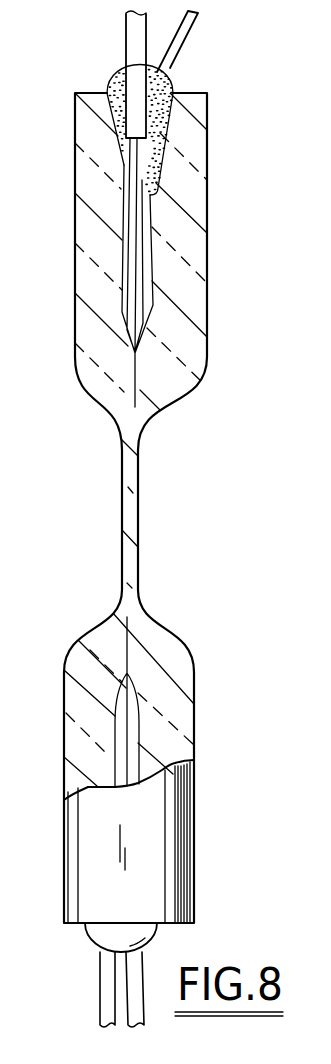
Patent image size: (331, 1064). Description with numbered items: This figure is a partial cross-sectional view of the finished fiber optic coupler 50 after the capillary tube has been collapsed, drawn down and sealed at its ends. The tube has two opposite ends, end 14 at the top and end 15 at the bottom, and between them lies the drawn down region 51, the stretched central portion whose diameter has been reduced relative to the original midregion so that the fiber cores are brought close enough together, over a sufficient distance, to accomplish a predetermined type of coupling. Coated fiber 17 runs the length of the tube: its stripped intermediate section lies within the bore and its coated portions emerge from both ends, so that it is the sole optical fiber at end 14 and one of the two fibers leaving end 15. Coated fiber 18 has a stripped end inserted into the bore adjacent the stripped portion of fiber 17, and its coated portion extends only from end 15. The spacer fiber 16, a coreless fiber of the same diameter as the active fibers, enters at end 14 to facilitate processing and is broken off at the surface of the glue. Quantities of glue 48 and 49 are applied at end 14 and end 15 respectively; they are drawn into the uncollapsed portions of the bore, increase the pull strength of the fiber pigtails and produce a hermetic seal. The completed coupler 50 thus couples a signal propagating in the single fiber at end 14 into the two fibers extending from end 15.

The tube end 14 is at (91, 93).
The tube end 15 is at (80, 923).
The spacer fiber 16 is at (199, 29).
The coated fiber 17 is at (126, 32).
The coated fiber 18 is at (146, 1004).
The glue 48 is at (170, 78).
The glue 49 is at (157, 933).
The fiber optic coupler 50 is at (75, 288).
The drawn down region 51 is at (139, 527).